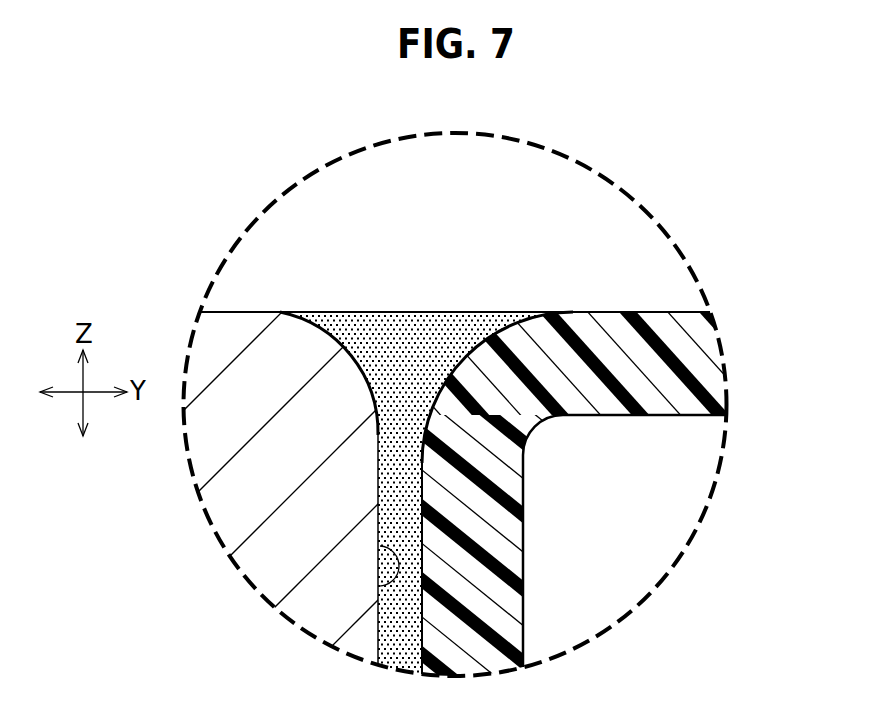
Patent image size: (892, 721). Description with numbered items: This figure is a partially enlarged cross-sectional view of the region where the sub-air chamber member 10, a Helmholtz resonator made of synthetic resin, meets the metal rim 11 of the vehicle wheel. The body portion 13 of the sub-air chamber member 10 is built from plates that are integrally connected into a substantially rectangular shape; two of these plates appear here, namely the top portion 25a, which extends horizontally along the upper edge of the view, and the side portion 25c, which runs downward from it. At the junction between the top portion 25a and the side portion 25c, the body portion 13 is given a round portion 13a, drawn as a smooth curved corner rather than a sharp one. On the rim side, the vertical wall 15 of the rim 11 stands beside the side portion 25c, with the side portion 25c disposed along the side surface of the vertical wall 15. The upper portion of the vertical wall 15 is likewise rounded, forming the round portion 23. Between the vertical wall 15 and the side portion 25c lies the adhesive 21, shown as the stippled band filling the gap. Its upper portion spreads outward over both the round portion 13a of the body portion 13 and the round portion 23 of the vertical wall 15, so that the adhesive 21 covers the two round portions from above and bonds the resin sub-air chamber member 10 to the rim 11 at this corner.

The sub-air chamber member 10 is at (567, 498).
The rim 11 is at (241, 508).
The body portion 13 is at (697, 370).
The round portion 13a is at (470, 346).
The vertical wall 15 is at (378, 587).
The adhesive 21 is at (402, 333).
The round portion 23 is at (347, 356).
The top portion 25a is at (647, 325).
The side portion 25c is at (512, 541).